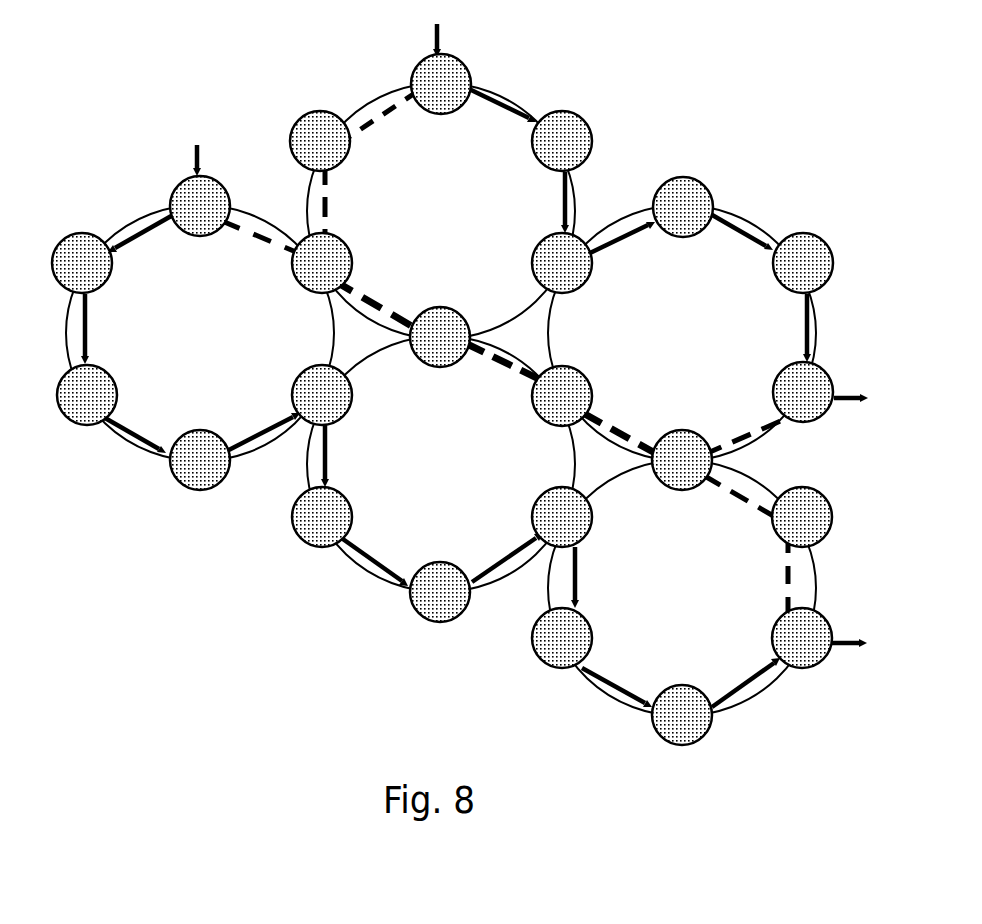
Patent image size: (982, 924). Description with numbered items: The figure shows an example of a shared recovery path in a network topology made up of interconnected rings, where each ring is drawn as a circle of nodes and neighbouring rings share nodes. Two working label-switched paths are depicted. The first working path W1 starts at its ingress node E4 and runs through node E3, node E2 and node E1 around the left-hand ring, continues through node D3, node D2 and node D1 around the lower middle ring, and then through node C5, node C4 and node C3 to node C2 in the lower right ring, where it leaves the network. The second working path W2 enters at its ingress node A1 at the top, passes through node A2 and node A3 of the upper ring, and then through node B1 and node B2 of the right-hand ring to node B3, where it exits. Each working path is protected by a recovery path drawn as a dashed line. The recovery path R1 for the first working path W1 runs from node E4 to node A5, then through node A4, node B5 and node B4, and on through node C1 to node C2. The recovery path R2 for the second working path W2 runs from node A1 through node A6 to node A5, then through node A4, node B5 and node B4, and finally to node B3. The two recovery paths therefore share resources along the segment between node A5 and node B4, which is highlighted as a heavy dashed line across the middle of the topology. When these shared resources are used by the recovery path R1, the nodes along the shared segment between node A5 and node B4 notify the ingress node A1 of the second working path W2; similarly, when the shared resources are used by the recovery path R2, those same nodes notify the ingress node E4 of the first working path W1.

The recovery path R1 is at (260, 237).
The recovery path R2 is at (380, 110).
The first working path W1 is at (133, 437).
The second working path W2 is at (497, 103).
The node A1 is at (441, 84).
The node A2 is at (562, 141).
The node A3 is at (562, 263).
The node A4 is at (440, 337).
The node A5 is at (322, 263).
The node A6 is at (320, 141).
The node B1 is at (683, 207).
The node B2 is at (803, 263).
The node B3 is at (803, 392).
The node B4 is at (682, 460).
The node B5 is at (562, 396).
The node C1 is at (802, 517).
The node C2 is at (802, 638).
The node C3 is at (682, 715).
The node C4 is at (562, 638).
The node C5 is at (562, 517).
The node D1 is at (440, 592).
The node D2 is at (322, 517).
The node D3 is at (322, 395).
The node E1 is at (200, 460).
The node E2 is at (87, 395).
The node E3 is at (82, 263).
The node E4 is at (200, 206).